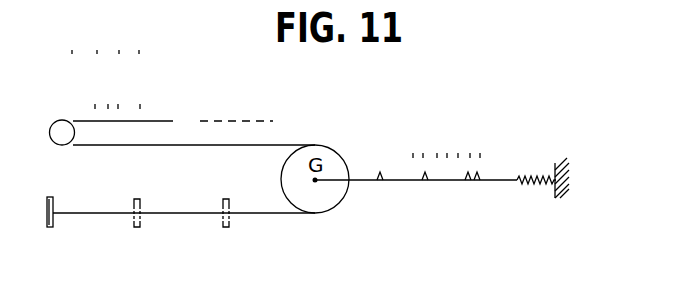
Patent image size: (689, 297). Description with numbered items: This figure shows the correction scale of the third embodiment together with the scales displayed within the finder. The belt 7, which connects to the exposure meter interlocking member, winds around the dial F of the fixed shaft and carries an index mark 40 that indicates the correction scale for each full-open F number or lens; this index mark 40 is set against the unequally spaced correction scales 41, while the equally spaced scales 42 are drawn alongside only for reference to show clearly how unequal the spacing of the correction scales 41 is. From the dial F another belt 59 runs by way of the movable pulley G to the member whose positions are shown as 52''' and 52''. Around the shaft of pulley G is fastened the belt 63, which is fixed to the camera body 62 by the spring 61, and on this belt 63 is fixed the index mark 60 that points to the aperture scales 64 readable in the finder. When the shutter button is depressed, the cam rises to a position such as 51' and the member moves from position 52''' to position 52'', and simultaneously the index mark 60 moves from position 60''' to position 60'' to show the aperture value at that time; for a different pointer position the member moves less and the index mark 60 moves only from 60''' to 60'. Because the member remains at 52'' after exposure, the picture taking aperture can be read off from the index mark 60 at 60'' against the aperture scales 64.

The belt 7 is at (173, 121).
The index mark 40 is at (95, 114).
The correction scales 41 is at (142, 107).
The equally spaced scales 42 is at (141, 53).
The cam position 51' is at (228, 235).
The member position 52'' is at (144, 235).
The member position 52''' is at (62, 234).
The belt 59 is at (163, 147).
The index mark 60 is at (496, 199).
The index mark position 60' is at (470, 205).
The index mark position 60'' is at (435, 210).
The index mark position 60''' is at (402, 204).
The spring 61 is at (537, 183).
The camera body 62 is at (562, 197).
The belt 63 is at (363, 181).
The aperture scales 64 is at (482, 156).